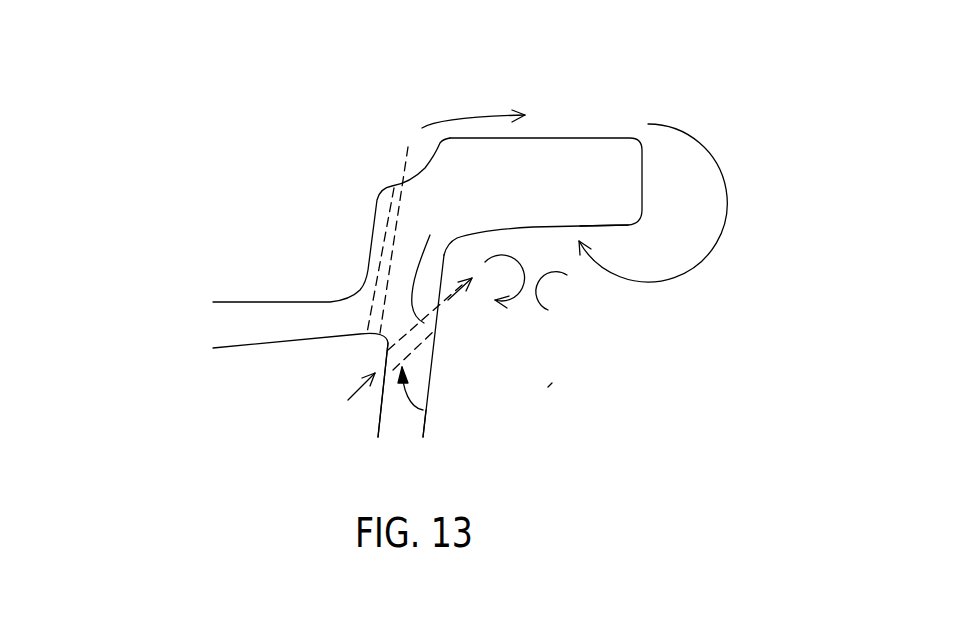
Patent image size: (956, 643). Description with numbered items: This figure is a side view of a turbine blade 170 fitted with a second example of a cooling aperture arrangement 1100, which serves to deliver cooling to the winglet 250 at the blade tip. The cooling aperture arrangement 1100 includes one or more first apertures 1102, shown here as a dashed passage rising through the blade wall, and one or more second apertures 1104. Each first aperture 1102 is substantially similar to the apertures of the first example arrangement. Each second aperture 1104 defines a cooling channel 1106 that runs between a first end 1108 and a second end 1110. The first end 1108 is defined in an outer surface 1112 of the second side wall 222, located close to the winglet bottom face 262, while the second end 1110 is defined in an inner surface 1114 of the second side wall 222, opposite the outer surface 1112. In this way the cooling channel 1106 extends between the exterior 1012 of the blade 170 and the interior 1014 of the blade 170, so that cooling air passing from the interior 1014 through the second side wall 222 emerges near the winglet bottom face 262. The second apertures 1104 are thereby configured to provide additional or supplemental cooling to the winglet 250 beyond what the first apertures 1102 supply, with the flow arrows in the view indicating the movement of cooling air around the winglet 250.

The blade 170 is at (688, 117).
The winglet 250 is at (567, 150).
The winglet bottom face 262 is at (608, 227).
The second side wall 222 is at (424, 375).
The exterior 1012 is at (548, 387).
The interior 1014 is at (210, 378).
The cooling aperture arrangement 1100 is at (332, 255).
The first aperture 1102 is at (412, 161).
The second aperture 1104 is at (425, 408).
The cooling channel 1106 is at (433, 264).
The first end 1108 is at (440, 313).
The second end 1110 is at (388, 359).
The outer surface 1112 is at (424, 423).
The inner surface 1114 is at (379, 422).